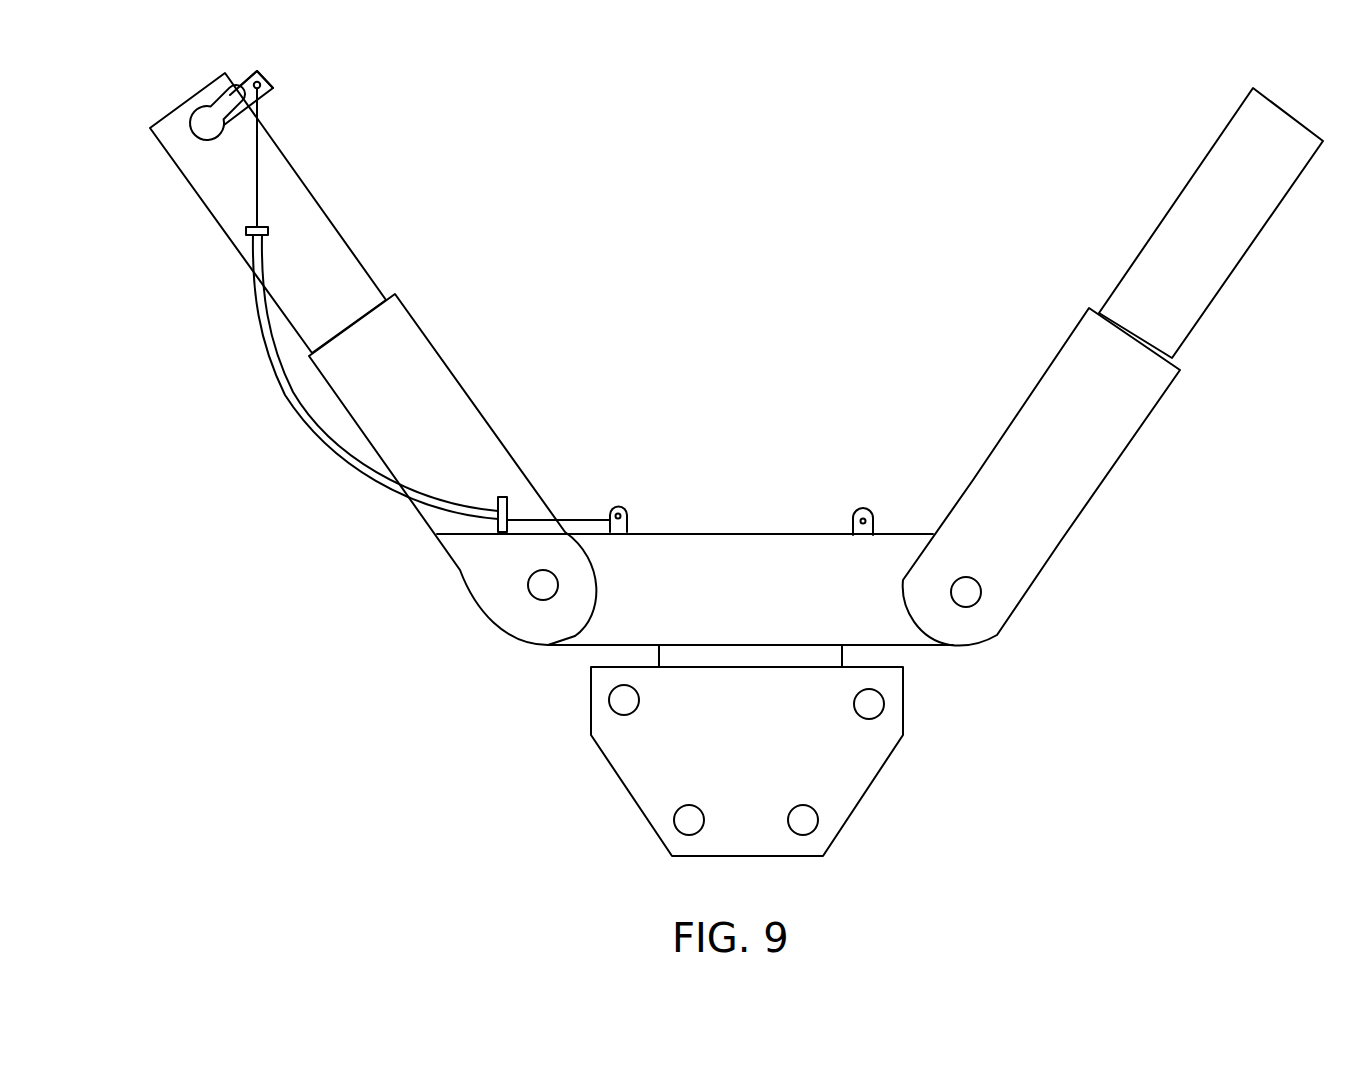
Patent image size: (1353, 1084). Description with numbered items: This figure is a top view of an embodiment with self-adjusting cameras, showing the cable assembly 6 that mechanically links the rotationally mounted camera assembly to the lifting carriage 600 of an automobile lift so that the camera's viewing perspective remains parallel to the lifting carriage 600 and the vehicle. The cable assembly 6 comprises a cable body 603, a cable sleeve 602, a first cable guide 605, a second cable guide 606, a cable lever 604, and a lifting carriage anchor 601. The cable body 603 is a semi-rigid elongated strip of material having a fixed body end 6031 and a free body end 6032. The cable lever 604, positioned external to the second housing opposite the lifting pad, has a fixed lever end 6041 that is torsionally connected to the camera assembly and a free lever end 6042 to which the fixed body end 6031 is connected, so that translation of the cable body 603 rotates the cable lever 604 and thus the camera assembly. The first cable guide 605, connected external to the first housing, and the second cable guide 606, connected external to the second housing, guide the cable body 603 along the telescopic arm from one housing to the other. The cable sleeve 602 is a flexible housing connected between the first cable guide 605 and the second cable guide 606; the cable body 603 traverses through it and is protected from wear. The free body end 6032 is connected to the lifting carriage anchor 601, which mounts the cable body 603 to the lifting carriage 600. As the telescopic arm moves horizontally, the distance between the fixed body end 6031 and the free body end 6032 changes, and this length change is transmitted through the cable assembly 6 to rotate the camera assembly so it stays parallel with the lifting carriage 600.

The cable assembly 6 is at (594, 204).
The lifting carriage 600 is at (820, 545).
The lifting carriage anchor 601 is at (628, 518).
The cable sleeve 602 is at (317, 433).
The cable body 603 is at (257, 190).
The cable lever 604 is at (227, 100).
The first cable guide 605 is at (498, 500).
The second cable guide 606 is at (268, 234).
The fixed body end 6031 is at (277, 90).
The free body end 6032 is at (619, 506).
The fixed lever end 6041 is at (186, 146).
The free lever end 6042 is at (284, 74).